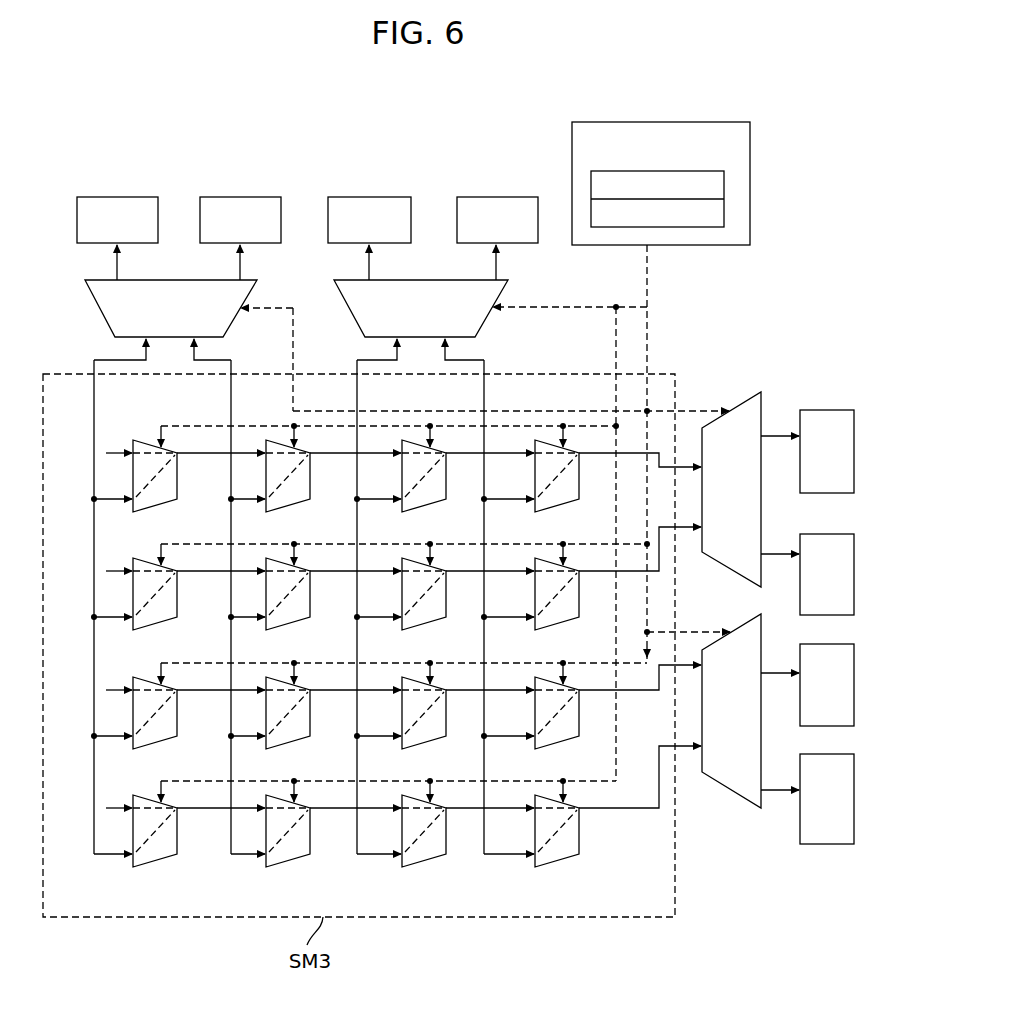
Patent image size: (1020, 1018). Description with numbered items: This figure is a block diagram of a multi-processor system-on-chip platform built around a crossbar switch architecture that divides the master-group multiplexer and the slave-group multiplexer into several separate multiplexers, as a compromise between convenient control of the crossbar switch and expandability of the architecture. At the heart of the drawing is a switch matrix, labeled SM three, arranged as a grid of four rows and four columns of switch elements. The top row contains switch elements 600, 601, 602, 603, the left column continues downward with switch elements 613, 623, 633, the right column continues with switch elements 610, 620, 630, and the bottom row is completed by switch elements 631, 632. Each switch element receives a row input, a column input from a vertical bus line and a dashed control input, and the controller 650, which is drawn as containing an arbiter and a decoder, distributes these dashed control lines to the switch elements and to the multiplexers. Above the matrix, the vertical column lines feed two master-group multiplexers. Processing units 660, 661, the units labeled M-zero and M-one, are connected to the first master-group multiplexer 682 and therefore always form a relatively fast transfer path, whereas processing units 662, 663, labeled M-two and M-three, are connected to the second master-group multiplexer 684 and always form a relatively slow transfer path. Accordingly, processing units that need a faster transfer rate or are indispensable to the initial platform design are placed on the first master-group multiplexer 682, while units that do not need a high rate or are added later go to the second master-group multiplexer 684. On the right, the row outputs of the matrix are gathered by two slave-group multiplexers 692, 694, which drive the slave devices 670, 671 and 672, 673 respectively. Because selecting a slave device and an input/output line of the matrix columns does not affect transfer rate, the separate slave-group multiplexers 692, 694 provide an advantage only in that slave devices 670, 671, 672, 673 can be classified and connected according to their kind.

The switch 600 is at (545, 440).
The switch 601 is at (410, 440).
The switch 602 is at (271, 440).
The switch 603 is at (138, 440).
The switch 610 is at (560, 623).
The switch 613 is at (133, 596).
The switch 620 is at (560, 741).
The switch 623 is at (133, 714).
The switch 630 is at (556, 863).
The switch 631 is at (422, 863).
The switch 632 is at (288, 863).
The switch 633 is at (133, 834).
The controller 650 is at (750, 183).
The master M0 660 is at (520, 197).
The master M1 661 is at (385, 197).
The master M2 662 is at (252, 197).
The master M3 663 is at (117, 197).
The slave S0 670 is at (854, 442).
The slave S1 671 is at (854, 563).
The slave S2 672 is at (854, 672).
The slave S3 673 is at (854, 780).
The first master-group multiplexer 682 is at (415, 281).
The second master-group multiplexer 684 is at (157, 280).
The multiplexer 692 is at (741, 400).
The multiplexer 694 is at (731, 794).